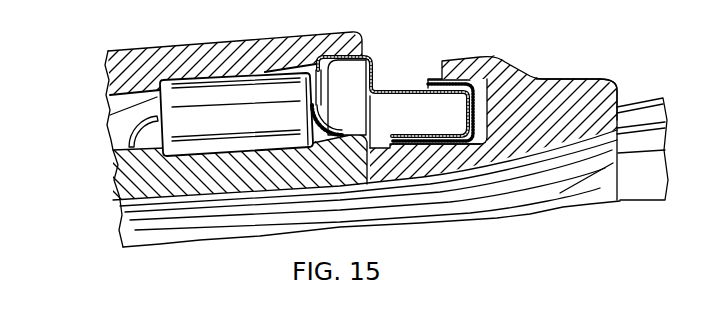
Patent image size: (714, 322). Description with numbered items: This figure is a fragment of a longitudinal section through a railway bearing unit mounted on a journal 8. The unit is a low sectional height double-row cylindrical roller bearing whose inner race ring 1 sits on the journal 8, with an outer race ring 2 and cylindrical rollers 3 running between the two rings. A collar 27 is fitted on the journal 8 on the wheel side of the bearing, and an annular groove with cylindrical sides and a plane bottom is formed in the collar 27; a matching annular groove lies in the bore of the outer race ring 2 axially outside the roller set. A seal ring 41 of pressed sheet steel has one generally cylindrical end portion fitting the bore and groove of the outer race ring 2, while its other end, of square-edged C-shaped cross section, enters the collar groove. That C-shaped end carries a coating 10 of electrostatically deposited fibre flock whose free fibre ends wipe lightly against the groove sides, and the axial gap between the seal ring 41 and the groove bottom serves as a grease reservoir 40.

The inner race ring 1 is at (188, 188).
The outer race ring 2 is at (131, 55).
The cylindrical rollers 3 is at (110, 113).
The journal 8 is at (637, 110).
The coating 10 is at (432, 81).
The collar 27 is at (552, 80).
The grease reservoir 40 is at (500, 60).
The seal ring 41 is at (393, 87).